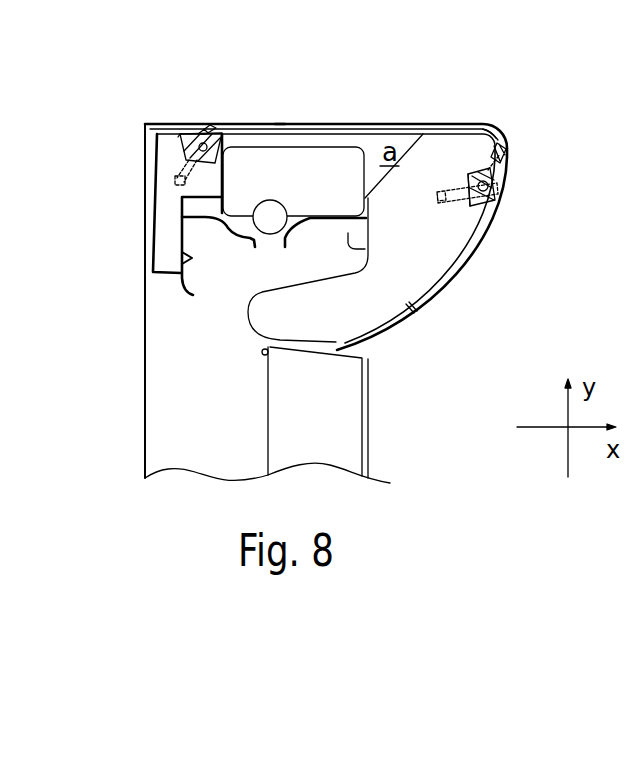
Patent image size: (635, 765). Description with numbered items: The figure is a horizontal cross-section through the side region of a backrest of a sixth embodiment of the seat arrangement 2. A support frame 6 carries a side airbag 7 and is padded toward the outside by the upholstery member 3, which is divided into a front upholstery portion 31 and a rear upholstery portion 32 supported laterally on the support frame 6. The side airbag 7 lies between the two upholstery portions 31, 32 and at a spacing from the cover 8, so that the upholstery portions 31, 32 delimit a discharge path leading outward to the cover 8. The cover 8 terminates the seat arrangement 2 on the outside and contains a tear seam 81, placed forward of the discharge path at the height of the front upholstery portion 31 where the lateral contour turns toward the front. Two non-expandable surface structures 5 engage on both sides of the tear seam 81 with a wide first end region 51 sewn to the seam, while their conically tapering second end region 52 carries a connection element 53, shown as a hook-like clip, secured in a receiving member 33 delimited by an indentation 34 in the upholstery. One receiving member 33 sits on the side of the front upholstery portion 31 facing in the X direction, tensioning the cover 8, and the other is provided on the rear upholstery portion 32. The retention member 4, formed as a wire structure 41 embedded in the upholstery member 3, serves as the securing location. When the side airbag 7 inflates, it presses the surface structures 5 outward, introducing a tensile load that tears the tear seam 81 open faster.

The seat arrangement 2 is at (140, 121).
The upholstery member 3 is at (250, 121).
The retention member 4 is at (176, 138).
The non-expandable surface structure 5 is at (334, 123).
The support frame 6 is at (180, 287).
The side airbag 7 is at (354, 147).
The cover 8 is at (372, 343).
The front upholstery portion 31 is at (418, 312).
The rear upholstery portion 32 is at (146, 215).
The receiving member 33 is at (372, 151).
The indentation 34 is at (183, 134).
The wire structure 41 is at (182, 177).
The first end region 51 is at (490, 141).
The second end region 52 is at (281, 123).
The connection element 53 is at (207, 127).
The tear seam 81 is at (501, 146).